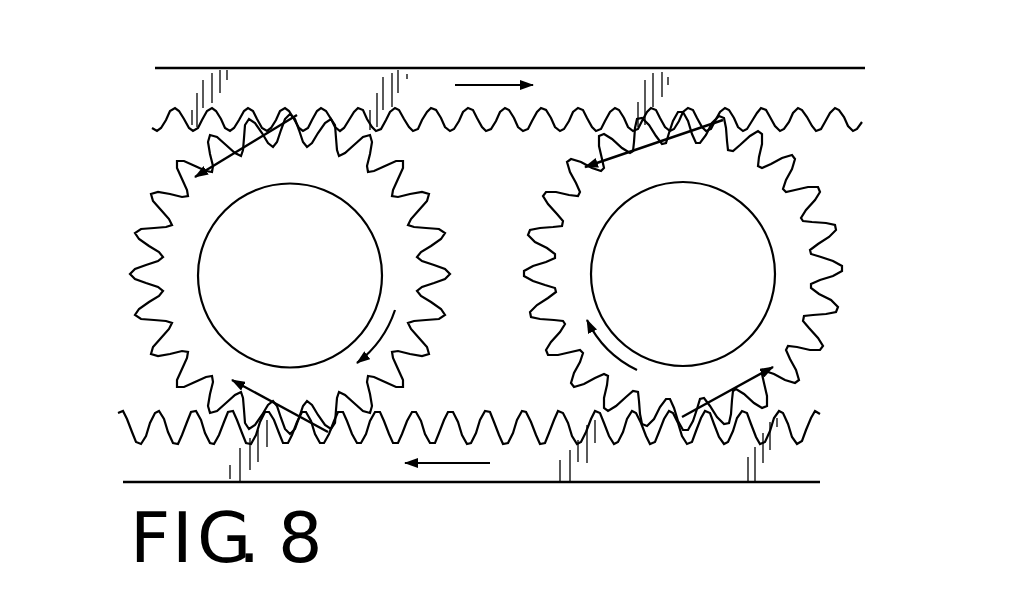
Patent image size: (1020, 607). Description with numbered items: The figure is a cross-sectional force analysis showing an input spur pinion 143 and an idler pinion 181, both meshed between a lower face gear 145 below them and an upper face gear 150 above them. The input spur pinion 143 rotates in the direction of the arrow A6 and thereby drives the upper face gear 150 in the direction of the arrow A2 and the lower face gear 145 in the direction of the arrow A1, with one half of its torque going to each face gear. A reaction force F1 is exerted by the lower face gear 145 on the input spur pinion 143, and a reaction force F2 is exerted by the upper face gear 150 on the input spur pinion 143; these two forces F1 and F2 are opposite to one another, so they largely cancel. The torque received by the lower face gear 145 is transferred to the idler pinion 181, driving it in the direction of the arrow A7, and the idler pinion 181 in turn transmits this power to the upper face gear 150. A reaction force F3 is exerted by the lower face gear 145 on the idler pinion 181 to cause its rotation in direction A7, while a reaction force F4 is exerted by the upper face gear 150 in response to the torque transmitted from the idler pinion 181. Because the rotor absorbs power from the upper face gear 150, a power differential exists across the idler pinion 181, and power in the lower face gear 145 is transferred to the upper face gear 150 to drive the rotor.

The upper face gear 150 is at (792, 92).
The lower face gear 145 is at (768, 450).
The idler pinion 181 is at (137, 307).
The input spur pinion 143 is at (826, 338).
The arrow indicating rotation direction of the lower face gear A1 is at (471, 464).
The arrow indicating rotation direction of the upper face gear A2 is at (522, 88).
The arrow indicating rotation direction of the input spur pinion A6 is at (634, 358).
The arrow indicating rotation direction of the idler pinion A7 is at (387, 321).
The reaction force exerted by the lower face gear on the input spur pinion F1 is at (735, 377).
The reaction force exerted by the upper face gear on the input spur pinion F2 is at (654, 149).
The reaction force exerted by the lower face gear on the idler pinion F3 is at (280, 403).
The reaction force exerted by the upper face gear on the idler pinion F4 is at (246, 149).